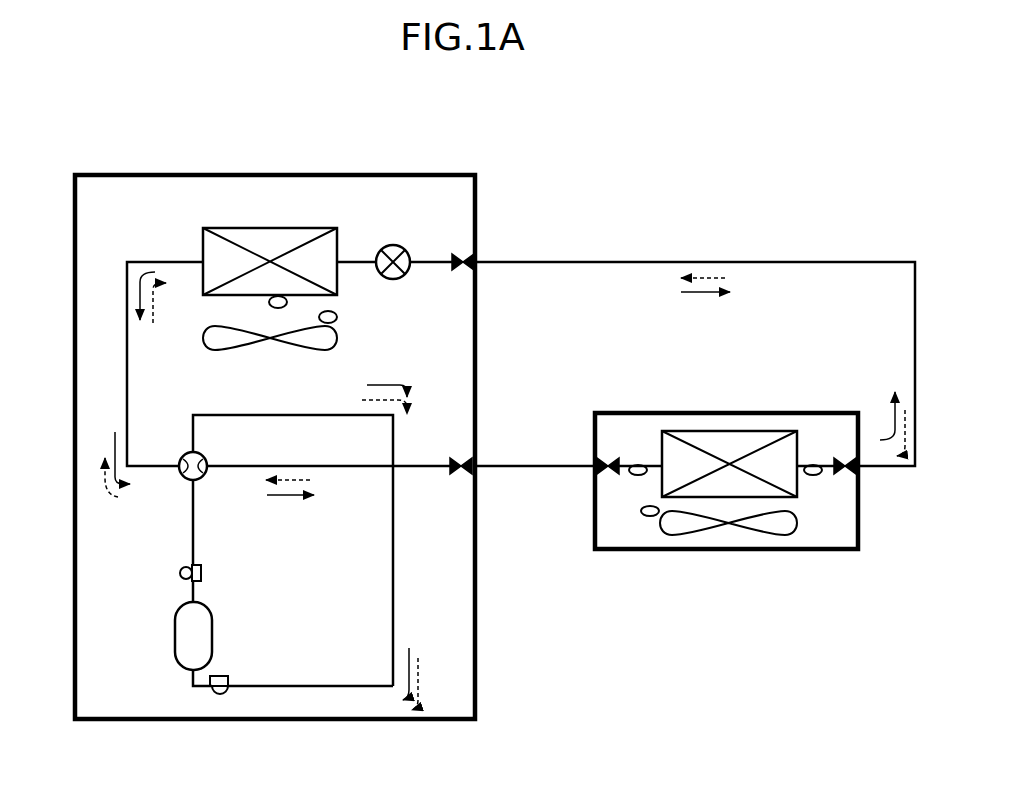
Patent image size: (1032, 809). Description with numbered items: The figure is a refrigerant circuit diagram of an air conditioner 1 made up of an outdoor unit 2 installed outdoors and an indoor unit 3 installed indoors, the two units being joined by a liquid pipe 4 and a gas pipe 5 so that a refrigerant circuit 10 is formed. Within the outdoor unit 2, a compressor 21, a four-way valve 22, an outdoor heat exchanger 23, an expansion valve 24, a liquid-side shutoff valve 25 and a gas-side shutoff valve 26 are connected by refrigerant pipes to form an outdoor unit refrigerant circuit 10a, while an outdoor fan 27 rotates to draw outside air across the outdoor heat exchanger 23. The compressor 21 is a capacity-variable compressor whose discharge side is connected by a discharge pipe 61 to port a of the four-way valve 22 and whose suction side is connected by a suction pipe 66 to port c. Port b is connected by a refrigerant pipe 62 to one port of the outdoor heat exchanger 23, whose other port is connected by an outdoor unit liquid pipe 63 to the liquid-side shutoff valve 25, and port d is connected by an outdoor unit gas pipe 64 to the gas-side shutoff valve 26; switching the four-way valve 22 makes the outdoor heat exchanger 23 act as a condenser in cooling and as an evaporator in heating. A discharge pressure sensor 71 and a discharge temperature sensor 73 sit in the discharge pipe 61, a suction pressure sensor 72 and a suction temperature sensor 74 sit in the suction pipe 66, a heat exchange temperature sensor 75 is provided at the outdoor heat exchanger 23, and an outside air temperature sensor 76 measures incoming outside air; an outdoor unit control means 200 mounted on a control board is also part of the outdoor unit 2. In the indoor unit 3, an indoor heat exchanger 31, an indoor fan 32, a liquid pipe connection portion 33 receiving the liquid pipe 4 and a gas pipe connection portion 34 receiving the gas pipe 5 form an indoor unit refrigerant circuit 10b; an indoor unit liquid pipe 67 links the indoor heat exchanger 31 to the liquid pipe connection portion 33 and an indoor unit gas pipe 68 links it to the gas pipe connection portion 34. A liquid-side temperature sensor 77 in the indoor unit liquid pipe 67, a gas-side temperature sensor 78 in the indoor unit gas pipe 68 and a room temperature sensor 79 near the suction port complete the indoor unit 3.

The air conditioner 1 is at (634, 138).
The outdoor unit 2 is at (95, 720).
The indoor unit 3 is at (595, 430).
The liquid pipe 4 is at (798, 262).
The gas pipe 5 is at (508, 466).
The refrigerant circuit 10 is at (670, 670).
The outdoor unit refrigerant circuit 10a is at (440, 535).
The indoor unit refrigerant circuit 10b is at (842, 510).
The compressor 21 is at (175, 637).
The four-way valve 22 is at (185, 455).
The outdoor heat exchanger 23 is at (224, 228).
The expansion valve 24 is at (393, 245).
The liquid-side shutoff valve 25 is at (476, 258).
The gas-side shutoff valve 26 is at (474, 470).
The outdoor fan 27 is at (215, 338).
The indoor heat exchanger 31 is at (770, 431).
The indoor fan 32 is at (690, 535).
The liquid pipe connection portion 33 is at (857, 472).
The gas pipe connection portion 34 is at (600, 472).
The discharge pipe 61 is at (193, 590).
The refrigerant pipe 62 is at (127, 365).
The outdoor unit liquid pipe 63 is at (357, 262).
The outdoor unit gas pipe 64 is at (272, 466).
The suction pipe 66 is at (396, 607).
The indoor unit liquid pipe 67 is at (812, 462).
The indoor unit gas pipe 68 is at (650, 462).
The discharge pressure sensor 71 is at (193, 550).
The suction pressure sensor 72 is at (250, 688).
The discharge temperature sensor 73 is at (180, 573).
The suction temperature sensor 74 is at (220, 696).
The heat exchange temperature sensor 75 is at (278, 296).
The outside air temperature sensor 76 is at (330, 311).
The liquid-side temperature sensor 77 is at (813, 476).
The gas-side temperature sensor 78 is at (633, 464).
The room temperature sensor 79 is at (650, 517).
The outdoor unit control means 200 is at (435, 679).